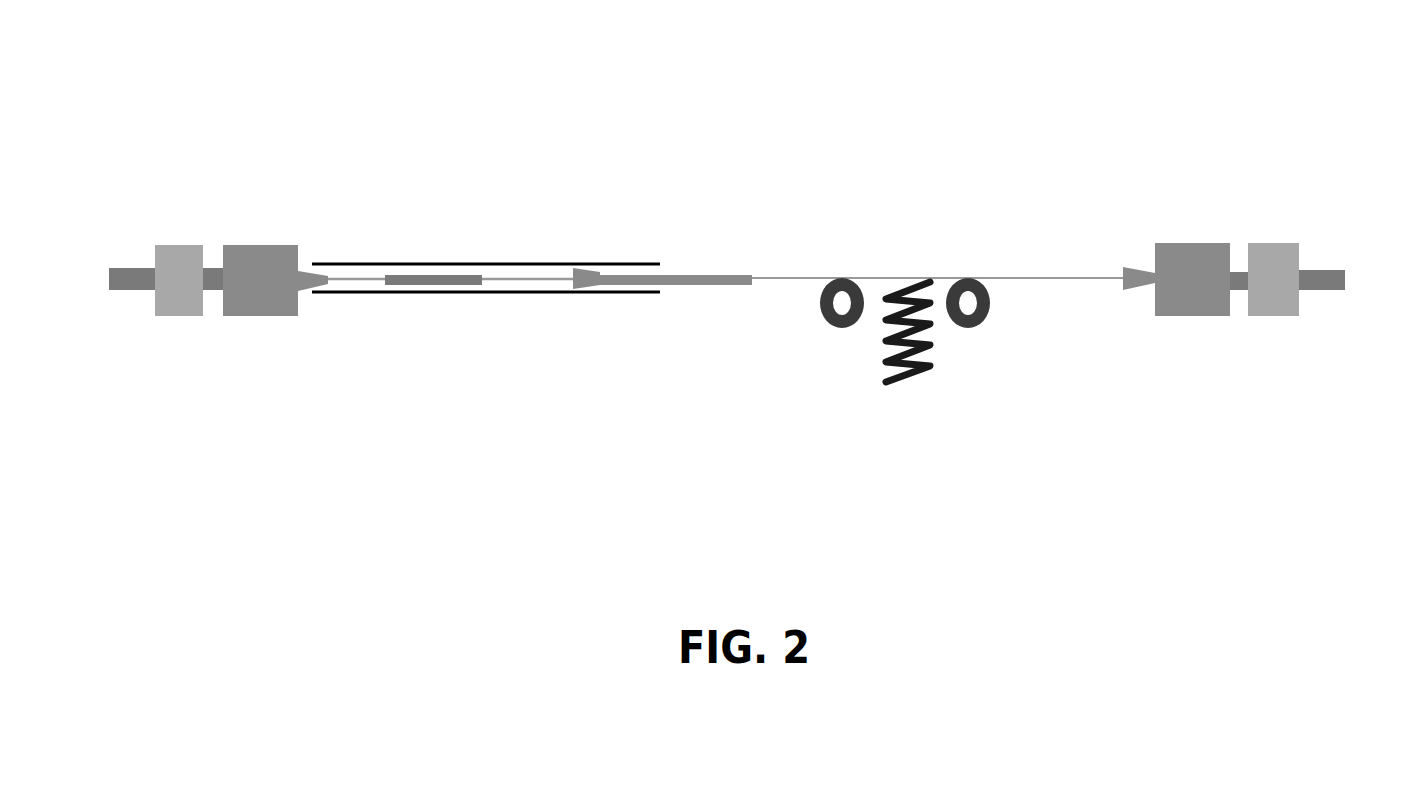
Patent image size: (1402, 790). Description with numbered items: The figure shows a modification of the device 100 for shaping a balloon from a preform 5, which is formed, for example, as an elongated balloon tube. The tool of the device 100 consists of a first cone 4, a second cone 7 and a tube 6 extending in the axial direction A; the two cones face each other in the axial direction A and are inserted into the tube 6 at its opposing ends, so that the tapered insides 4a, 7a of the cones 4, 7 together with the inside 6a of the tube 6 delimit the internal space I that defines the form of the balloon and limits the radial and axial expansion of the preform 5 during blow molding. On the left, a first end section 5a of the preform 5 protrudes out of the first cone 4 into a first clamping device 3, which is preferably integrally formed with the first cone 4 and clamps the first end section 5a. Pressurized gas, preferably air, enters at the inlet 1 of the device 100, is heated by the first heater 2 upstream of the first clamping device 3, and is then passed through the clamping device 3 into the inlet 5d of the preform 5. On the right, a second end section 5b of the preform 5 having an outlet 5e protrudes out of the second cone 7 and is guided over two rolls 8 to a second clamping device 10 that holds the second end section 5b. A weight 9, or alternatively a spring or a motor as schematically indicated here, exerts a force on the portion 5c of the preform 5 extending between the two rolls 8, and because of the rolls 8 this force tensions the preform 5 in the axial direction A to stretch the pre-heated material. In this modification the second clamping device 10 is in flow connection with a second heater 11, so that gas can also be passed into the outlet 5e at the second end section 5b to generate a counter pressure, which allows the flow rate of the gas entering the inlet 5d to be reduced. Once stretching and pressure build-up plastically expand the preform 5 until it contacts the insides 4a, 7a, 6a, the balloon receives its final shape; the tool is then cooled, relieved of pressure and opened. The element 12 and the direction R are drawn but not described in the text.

The device 100 is at (620, 110).
The inlet 1 is at (119, 264).
The first heater 2 is at (180, 243).
The first clamping device 3 is at (260, 243).
The first cone 4 is at (326, 272).
The tapered inside of first cone 4a is at (316, 276).
The preform 5 is at (402, 274).
The first end section 5a is at (349, 275).
The second end section 5b is at (1045, 277).
The portion 5c is at (868, 277).
The inlet of preform 5d is at (290, 285).
The outlet of preform 5e is at (1163, 277).
The tube 6 is at (462, 265).
The inside of tube 6a is at (493, 264).
The second cone 7 is at (584, 270).
The tapered inside of second cone 7a is at (600, 272).
The rolls 8 is at (840, 280).
The weight 9 is at (905, 276).
The second clamping device 10 is at (1193, 247).
The second heater 11 is at (1276, 243).
The output shaft 12 is at (1343, 270).
The rotation direction R is at (421, 262).
The internal space I is at (479, 278).
The axial direction A is at (475, 307).